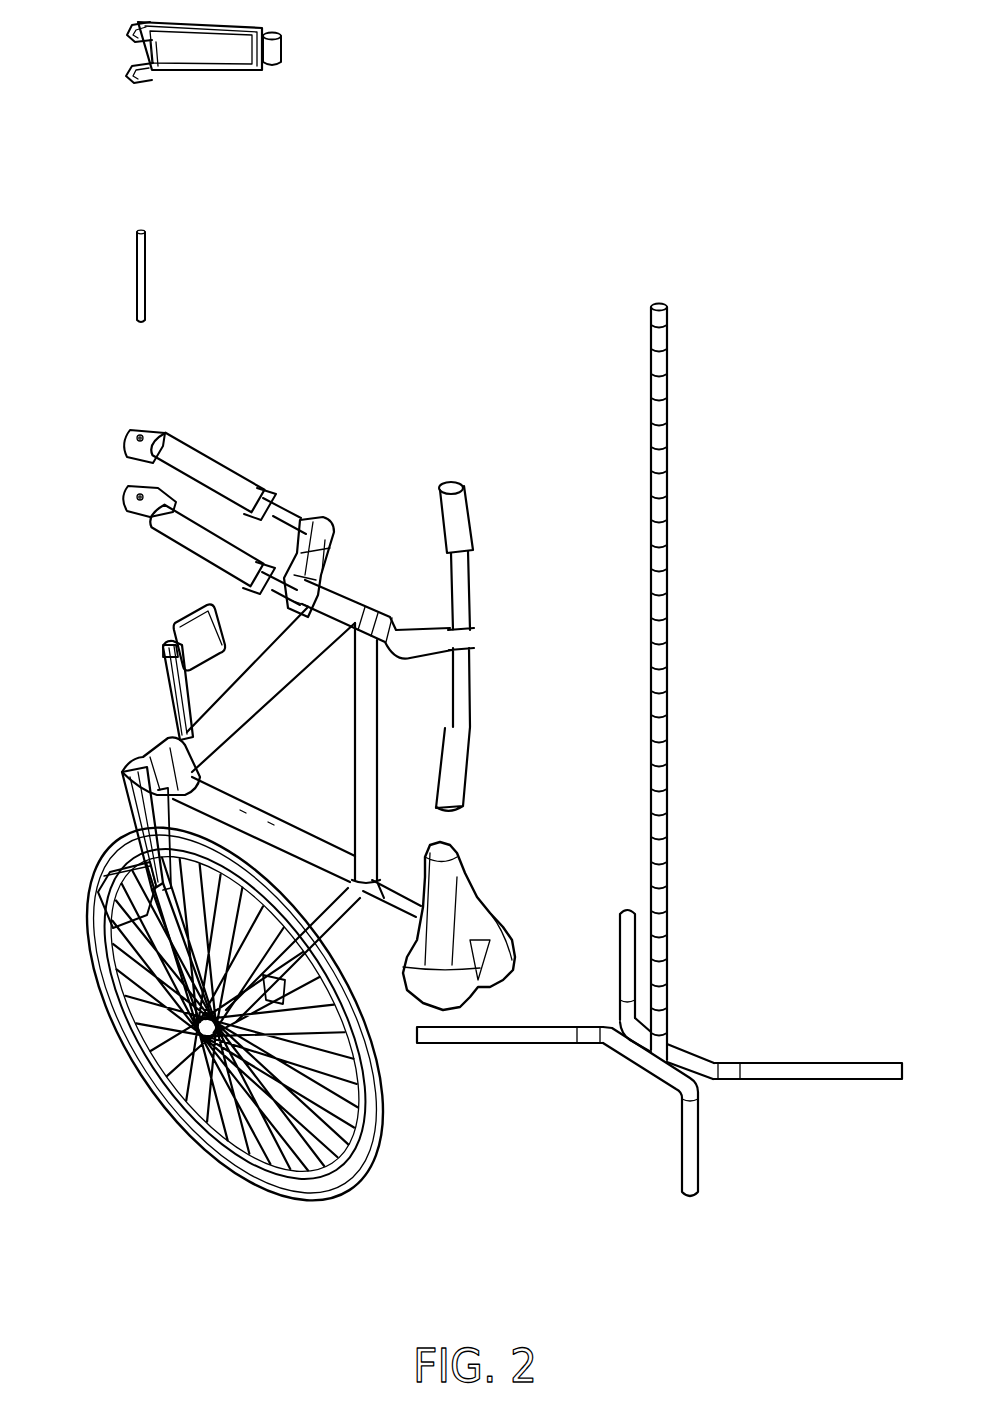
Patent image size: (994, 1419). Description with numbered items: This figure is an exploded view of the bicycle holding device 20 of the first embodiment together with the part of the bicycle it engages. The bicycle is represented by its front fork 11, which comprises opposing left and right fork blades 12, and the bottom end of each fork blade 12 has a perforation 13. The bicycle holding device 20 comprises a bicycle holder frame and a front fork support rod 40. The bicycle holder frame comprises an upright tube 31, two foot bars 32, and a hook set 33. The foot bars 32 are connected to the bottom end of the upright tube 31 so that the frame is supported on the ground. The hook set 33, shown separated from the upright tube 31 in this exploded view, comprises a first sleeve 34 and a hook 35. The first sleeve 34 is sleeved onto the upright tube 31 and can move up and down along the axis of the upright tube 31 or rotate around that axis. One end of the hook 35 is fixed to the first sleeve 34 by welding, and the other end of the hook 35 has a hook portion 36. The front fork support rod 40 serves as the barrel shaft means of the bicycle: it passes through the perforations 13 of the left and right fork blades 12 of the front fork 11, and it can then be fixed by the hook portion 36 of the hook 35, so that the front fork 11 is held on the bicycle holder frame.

The front fork 11 is at (325, 519).
The fork blade 12 is at (213, 470).
The perforation 13 is at (140, 495).
The bicycle holding device 20 is at (659, 611).
The upright tube 31 is at (666, 581).
The foot bar 32 is at (832, 1068).
The hook set 33 is at (229, 120).
The first sleeve 34 is at (279, 66).
The hook 35 is at (203, 75).
The hook portion 36 is at (132, 105).
The front fork support rod 40 is at (141, 280).